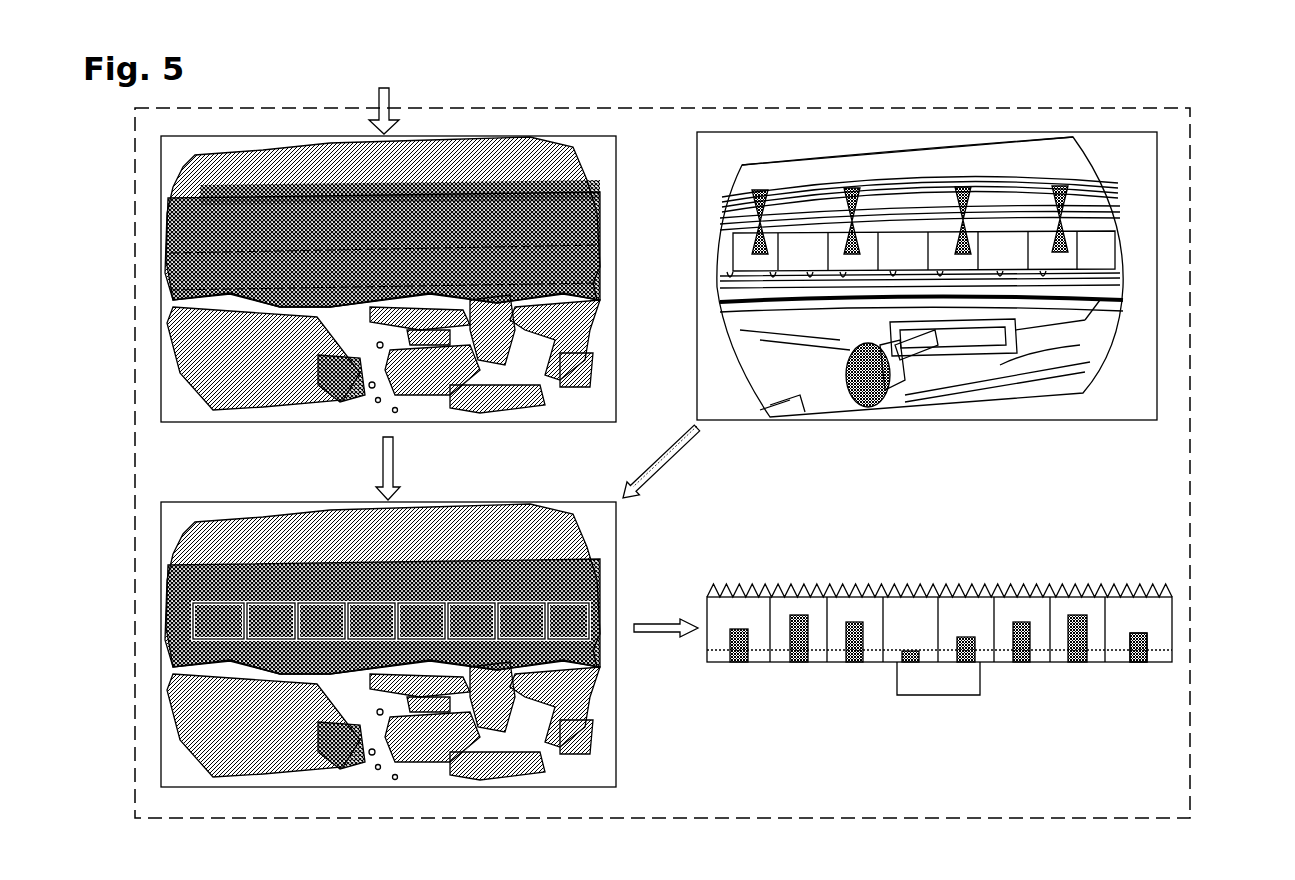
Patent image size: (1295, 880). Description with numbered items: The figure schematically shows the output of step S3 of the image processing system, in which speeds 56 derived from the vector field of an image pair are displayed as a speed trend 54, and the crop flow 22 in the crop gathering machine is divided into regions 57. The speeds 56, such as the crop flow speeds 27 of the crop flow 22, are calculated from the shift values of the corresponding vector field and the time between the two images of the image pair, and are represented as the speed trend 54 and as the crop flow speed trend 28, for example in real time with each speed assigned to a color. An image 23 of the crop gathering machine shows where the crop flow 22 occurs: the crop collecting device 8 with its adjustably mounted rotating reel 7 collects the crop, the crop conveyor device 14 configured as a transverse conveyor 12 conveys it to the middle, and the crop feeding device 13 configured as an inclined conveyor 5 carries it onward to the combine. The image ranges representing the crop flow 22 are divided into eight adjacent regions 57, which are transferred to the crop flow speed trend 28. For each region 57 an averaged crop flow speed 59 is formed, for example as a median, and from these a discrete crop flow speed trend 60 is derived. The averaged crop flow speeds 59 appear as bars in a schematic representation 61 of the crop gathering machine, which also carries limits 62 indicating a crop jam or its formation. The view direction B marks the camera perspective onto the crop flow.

The speed trend 54 is at (628, 138).
The speeds 56 is at (210, 307).
The crop flow speeds 27 is at (410, 247).
The crop flow speed trend 28 is at (170, 253).
The regions 57 is at (1006, 224).
The images 23 is at (1164, 160).
The crop collecting device 8 is at (990, 203).
The reel 7 is at (1105, 213).
The crop flow 22 is at (1140, 248).
The inclined conveyor 5 is at (902, 402).
The crop feeding device 13 is at (950, 342).
The transverse conveyor 12 is at (997, 378).
The crop conveyor device 14 is at (1012, 282).
The discrete crop flow speed trend 60 is at (989, 644).
The schematic representation 61 is at (1165, 578).
The averaged crop flow speed 59 is at (739, 663).
The limits 62 is at (1118, 652).
The step S3 is at (157, 467).
The view direction B is at (384, 86).